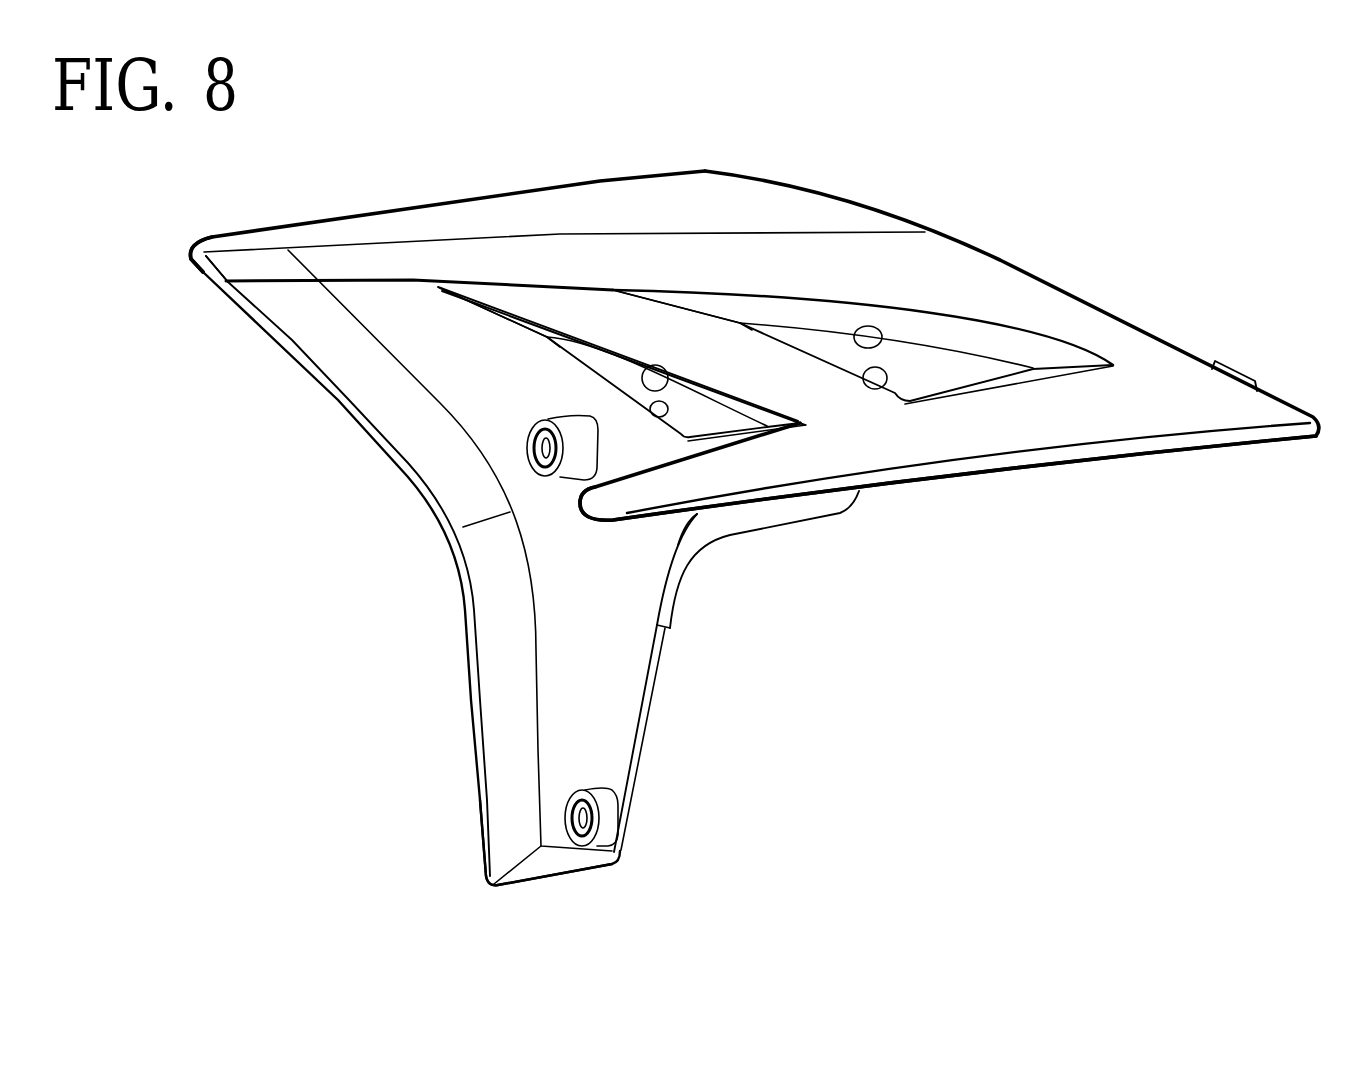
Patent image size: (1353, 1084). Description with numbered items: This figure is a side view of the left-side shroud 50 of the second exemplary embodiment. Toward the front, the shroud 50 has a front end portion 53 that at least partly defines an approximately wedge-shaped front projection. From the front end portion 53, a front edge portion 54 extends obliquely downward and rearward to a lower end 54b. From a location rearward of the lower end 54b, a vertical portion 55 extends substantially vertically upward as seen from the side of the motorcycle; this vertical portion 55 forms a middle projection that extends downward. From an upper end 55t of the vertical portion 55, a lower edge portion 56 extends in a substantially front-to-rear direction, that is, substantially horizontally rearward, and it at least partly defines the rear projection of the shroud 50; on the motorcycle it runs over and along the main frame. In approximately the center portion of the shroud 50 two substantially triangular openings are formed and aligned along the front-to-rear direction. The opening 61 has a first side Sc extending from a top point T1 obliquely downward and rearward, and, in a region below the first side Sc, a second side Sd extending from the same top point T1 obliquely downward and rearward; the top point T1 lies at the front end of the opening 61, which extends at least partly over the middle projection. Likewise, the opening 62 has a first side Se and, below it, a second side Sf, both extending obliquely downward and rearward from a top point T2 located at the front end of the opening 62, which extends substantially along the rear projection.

The shroud 50 is at (1153, 254).
The front end portion 53 is at (181, 268).
The front edge portion 54 is at (400, 479).
The lower end 54b is at (477, 871).
The vertical portion 55 is at (655, 696).
The upper end 55t is at (697, 518).
The lower edge portion 56 is at (1012, 472).
The opening 61 is at (706, 425).
The opening 62 is at (932, 381).
The top point T1 is at (547, 337).
The top point T2 is at (742, 322).
The first side Sc is at (648, 367).
The second side Sd is at (652, 415).
The first side Se is at (858, 328).
The second side Sf is at (864, 389).